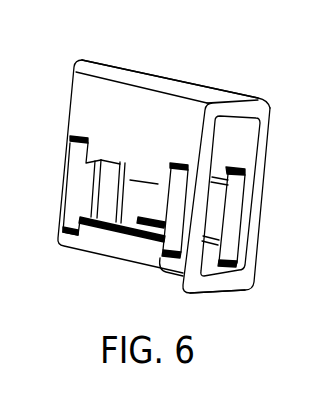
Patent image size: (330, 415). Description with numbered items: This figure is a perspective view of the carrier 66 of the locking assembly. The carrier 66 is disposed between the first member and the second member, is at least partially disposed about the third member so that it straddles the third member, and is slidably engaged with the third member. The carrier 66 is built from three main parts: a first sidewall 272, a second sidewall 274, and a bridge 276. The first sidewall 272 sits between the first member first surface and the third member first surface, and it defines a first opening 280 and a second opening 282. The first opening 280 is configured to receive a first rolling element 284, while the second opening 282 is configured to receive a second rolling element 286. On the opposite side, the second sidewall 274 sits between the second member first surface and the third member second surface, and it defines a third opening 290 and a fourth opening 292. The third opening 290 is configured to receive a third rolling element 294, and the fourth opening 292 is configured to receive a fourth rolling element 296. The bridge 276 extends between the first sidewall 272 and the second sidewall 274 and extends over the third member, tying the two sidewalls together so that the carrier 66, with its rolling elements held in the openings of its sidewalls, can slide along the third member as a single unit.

The carrier 66 is at (231, 74).
The first sidewall 272 is at (272, 130).
The second sidewall 274 is at (197, 271).
The bridge 276 is at (200, 88).
The first opening 280 is at (245, 178).
The second opening 282 is at (147, 218).
The first rolling element 284 is at (230, 243).
The second rolling element 286 is at (107, 205).
The third opening 290 is at (173, 165).
The fourth opening 292 is at (84, 134).
The third rolling element 294 is at (160, 273).
The fourth rolling element 296 is at (78, 172).